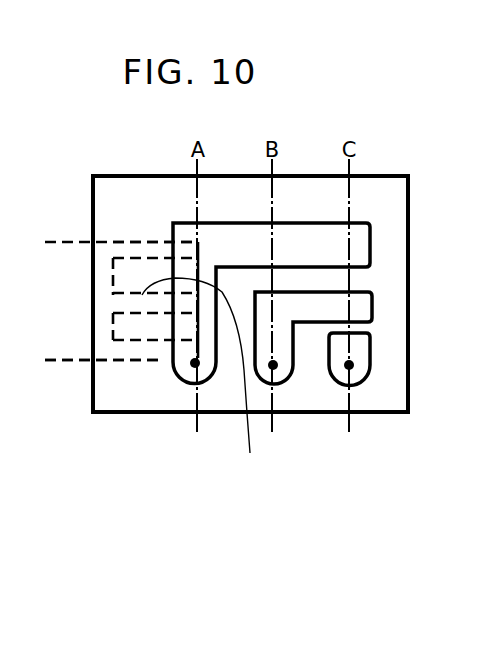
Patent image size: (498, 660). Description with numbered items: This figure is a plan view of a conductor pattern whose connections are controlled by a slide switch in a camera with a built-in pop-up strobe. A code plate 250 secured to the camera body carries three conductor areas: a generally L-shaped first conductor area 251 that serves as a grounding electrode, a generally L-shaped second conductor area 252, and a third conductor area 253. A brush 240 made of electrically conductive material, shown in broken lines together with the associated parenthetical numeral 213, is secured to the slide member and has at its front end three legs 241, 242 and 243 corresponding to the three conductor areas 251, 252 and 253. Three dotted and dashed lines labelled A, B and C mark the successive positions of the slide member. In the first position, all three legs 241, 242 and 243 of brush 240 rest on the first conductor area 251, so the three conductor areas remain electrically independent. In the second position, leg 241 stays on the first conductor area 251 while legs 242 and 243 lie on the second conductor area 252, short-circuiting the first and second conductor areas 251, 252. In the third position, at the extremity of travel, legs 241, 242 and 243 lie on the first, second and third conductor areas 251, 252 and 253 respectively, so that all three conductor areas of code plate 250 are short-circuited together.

The brush 240 is at (57, 362).
The piezoelectric element 213 is at (91, 486).
The leg 241 is at (163, 242).
The leg 242 is at (250, 453).
The leg 243 is at (148, 360).
The code plate 250 is at (228, 176).
The first conductor area 251 is at (213, 372).
The second conductor area 252 is at (292, 374).
The third conductor area 253 is at (368, 374).